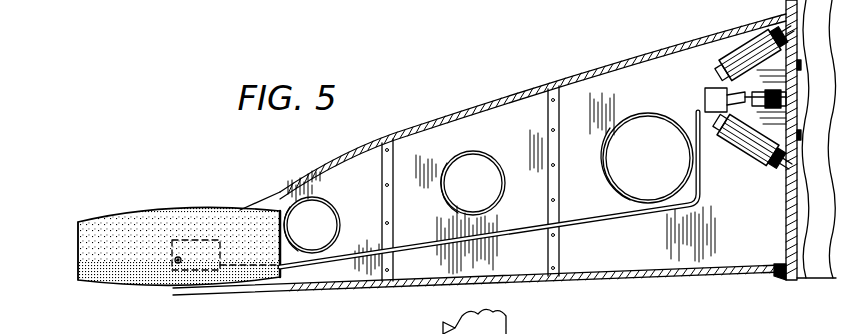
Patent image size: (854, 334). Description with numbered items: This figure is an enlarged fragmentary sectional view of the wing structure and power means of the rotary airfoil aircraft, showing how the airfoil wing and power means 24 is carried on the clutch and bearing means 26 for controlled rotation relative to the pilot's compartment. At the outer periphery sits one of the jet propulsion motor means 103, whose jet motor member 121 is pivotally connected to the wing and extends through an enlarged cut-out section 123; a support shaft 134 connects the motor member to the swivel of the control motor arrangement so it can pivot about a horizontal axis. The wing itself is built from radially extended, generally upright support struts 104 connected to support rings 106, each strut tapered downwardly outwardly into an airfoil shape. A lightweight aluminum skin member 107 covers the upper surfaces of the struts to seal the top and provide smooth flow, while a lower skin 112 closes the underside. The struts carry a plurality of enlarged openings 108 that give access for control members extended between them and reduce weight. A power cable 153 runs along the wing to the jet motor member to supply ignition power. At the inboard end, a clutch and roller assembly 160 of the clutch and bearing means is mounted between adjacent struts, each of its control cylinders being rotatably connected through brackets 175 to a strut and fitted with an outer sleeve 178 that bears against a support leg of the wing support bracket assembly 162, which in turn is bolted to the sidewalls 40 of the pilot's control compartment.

The airfoil wing and power means 24 is at (523, 86).
The clutch and bearing means 26 is at (711, 73).
The sidewalls 40 is at (474, 321).
The jet propulsion motor means 103 is at (161, 193).
The support strut 104 is at (650, 248).
The support ring 106 is at (561, 110).
The skin member 107 is at (344, 153).
The enlarged opening 108 is at (468, 165).
The lower wing skin 112 is at (733, 277).
The jet motor member 121 is at (87, 240).
The enlarged cut-out section 123 is at (264, 199).
The support shaft 134 is at (178, 264).
The power cable 153 is at (708, 142).
The clutch and roller assembly 160 is at (777, 14).
The wing support bracket assembly 162 is at (752, 163).
The bracket 175 is at (414, 333).
The outer sleeve 178 is at (740, 32).